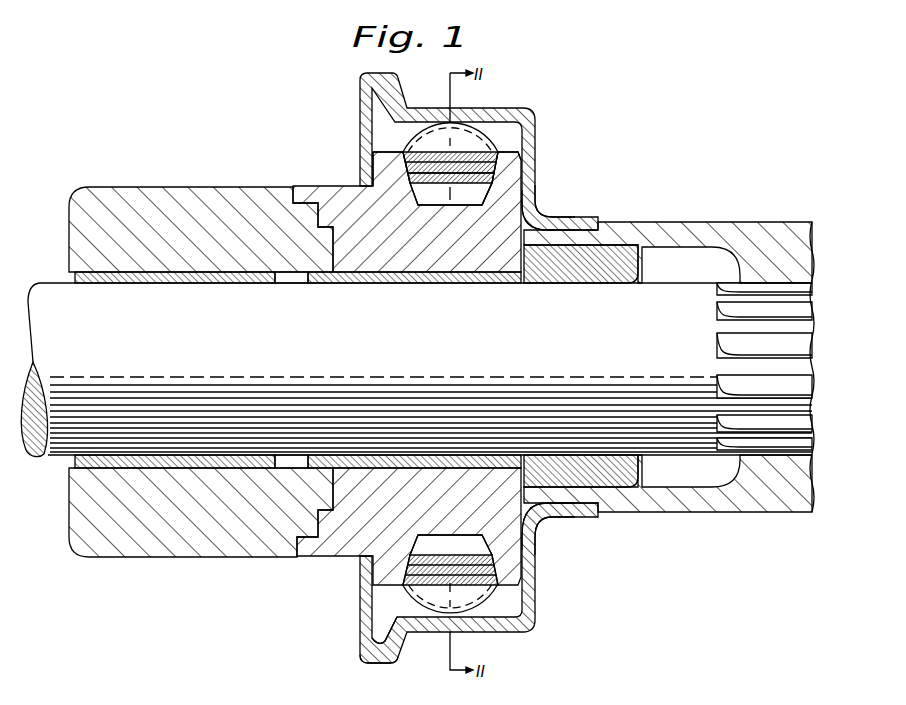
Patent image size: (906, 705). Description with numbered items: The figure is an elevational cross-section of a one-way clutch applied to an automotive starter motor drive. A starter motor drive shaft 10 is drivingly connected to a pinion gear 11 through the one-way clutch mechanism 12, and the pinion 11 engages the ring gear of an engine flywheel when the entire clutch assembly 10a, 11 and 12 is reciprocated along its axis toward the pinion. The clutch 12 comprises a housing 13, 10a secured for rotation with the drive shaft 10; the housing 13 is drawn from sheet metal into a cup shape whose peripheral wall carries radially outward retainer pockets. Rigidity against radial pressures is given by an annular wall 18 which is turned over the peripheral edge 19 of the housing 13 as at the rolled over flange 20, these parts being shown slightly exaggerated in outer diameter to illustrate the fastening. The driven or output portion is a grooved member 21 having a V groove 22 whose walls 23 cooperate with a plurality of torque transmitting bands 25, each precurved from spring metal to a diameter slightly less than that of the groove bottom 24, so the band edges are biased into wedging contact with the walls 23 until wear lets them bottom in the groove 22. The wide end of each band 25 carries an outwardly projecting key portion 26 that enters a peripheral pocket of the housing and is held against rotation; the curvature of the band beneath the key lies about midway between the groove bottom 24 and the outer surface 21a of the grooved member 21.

The starter motor drive shaft 10 is at (406, 366).
The housing portion 10a is at (718, 232).
The pinion gear 11 is at (158, 205).
The one-way clutch mechanism 12 is at (536, 139).
The housing 13 is at (530, 203).
The annular wall 18 is at (358, 604).
The peripheral edge 19 is at (393, 638).
The rolled over flange 20 is at (384, 662).
The grooved member 21 is at (360, 208).
The outer surface of grooved member 21a is at (506, 157).
The V groove 22 is at (407, 162).
The groove walls 23 is at (486, 198).
The groove bottom 24 is at (447, 198).
The torque transmitting band 25 is at (403, 155).
The key portion 26 is at (479, 131).